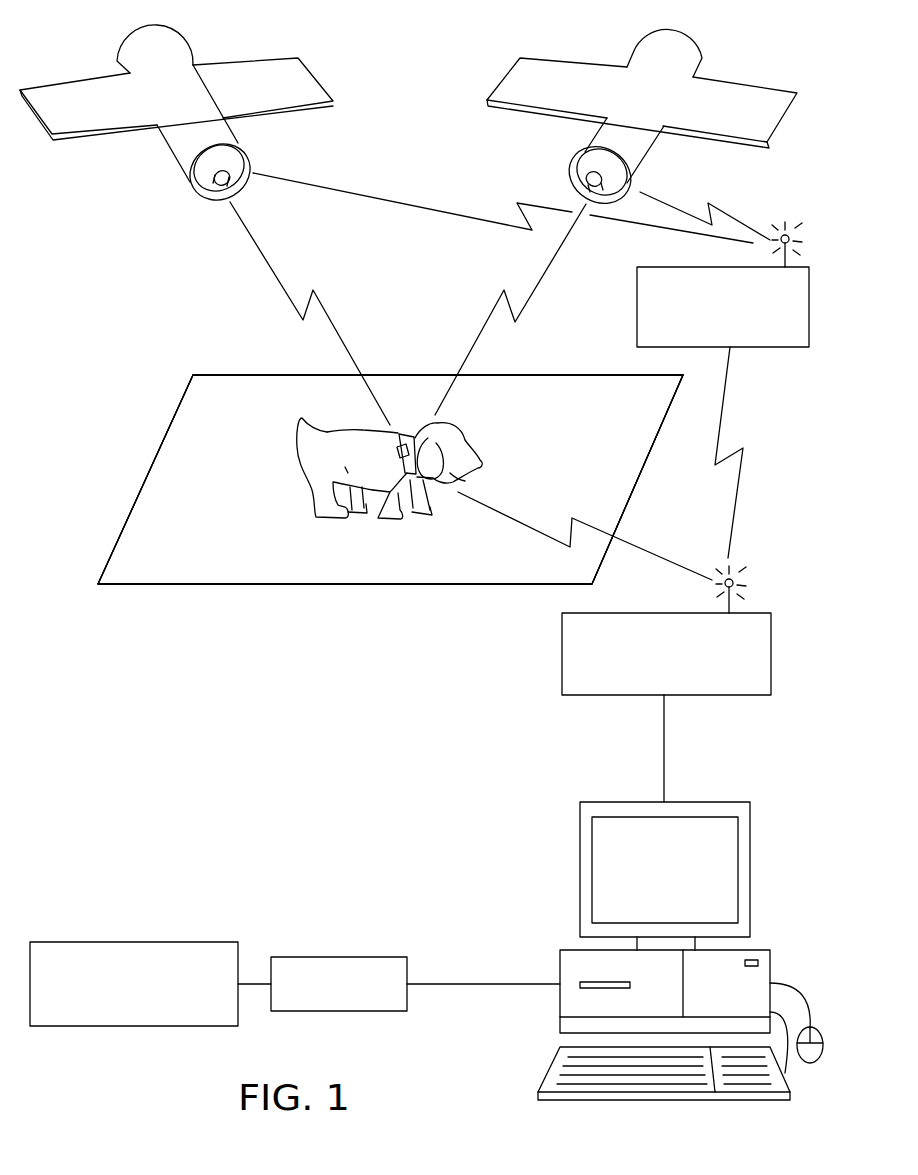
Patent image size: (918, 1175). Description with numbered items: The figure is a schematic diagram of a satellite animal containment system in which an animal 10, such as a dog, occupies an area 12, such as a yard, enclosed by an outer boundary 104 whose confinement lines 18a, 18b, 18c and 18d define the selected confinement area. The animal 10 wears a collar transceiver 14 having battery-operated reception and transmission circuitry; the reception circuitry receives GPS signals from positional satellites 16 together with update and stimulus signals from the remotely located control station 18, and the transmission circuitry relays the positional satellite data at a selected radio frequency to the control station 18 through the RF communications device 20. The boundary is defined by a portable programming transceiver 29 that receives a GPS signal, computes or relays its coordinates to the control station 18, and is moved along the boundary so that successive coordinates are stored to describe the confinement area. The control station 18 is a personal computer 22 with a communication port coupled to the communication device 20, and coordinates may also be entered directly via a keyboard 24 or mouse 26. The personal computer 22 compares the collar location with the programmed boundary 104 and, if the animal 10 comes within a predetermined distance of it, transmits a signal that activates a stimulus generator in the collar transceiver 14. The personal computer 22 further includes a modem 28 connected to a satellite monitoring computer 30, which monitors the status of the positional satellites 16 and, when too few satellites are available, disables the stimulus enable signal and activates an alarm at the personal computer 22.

The animal 10 is at (384, 429).
The area 12 is at (243, 545).
The collar transceiver 14 is at (398, 432).
The positional satellites 16 is at (177, 55).
The remotely located control station 18 is at (647, 970).
The line of confinement area 18a is at (572, 376).
The line of confinement area 18b is at (167, 432).
The line of confinement area 18c is at (402, 584).
The line of confinement area 18d is at (640, 473).
The RF communications device 20 is at (605, 695).
The personal computer 22 is at (567, 950).
The keyboard 24 is at (668, 1100).
The mouse 26 is at (813, 1052).
The modem 28 is at (310, 957).
The portable programming transceiver 29 is at (752, 347).
The satellite monitoring computer 30 is at (117, 942).
The outer boundary 104 is at (190, 584).